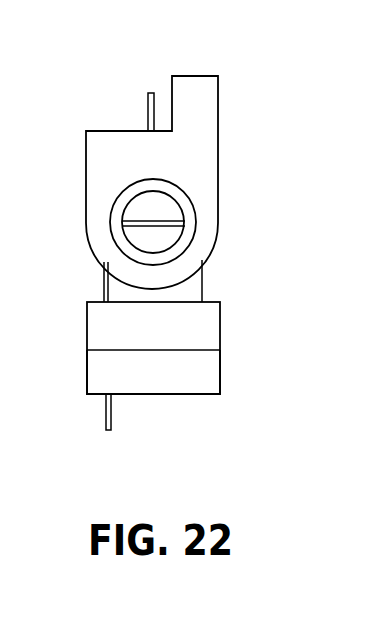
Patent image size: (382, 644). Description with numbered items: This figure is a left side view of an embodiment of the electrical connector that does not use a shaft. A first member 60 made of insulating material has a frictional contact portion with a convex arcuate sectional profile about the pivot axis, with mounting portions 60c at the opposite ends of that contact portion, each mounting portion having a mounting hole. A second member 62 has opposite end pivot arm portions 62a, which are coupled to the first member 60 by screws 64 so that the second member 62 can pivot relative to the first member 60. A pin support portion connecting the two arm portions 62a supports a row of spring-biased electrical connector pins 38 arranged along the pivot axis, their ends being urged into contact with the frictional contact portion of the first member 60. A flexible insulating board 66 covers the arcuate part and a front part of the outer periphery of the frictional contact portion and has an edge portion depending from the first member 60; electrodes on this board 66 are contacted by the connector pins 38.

The spring-biased electrical connector pin 38 is at (147, 95).
The second member 62 is at (207, 160).
The pivot arm portion 62a is at (203, 240).
The screw 64 is at (122, 223).
The first member 60 is at (202, 322).
The mounting portion 60c is at (202, 372).
The flexible insulating board 66 is at (105, 408).